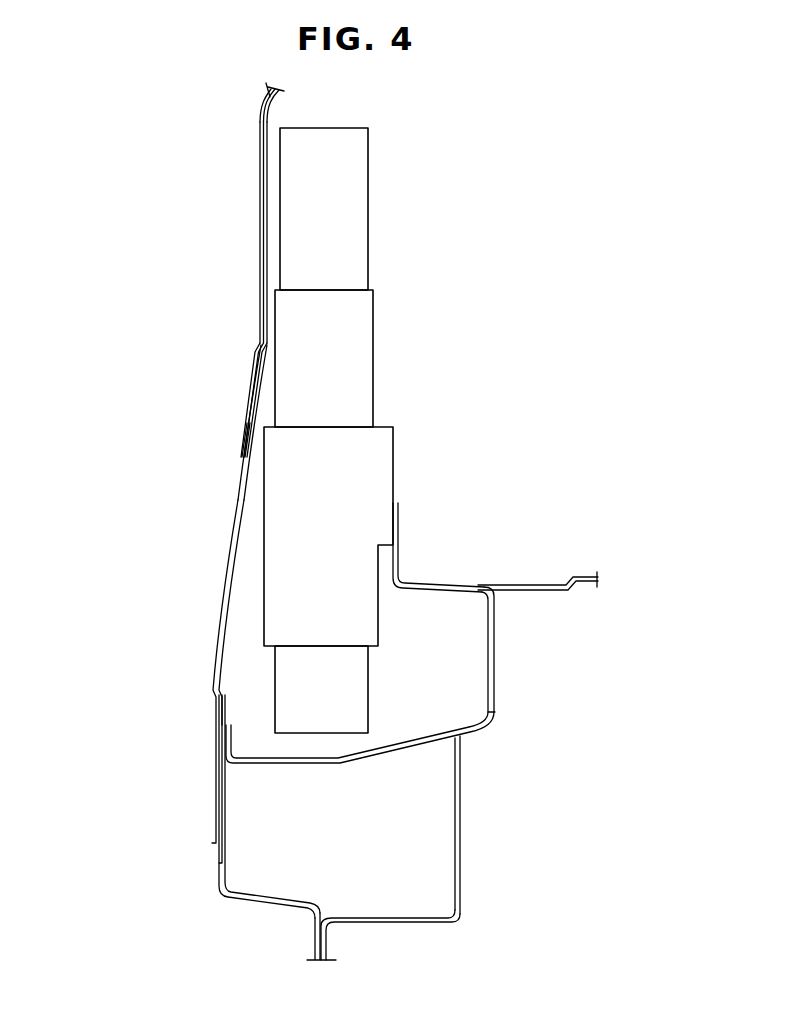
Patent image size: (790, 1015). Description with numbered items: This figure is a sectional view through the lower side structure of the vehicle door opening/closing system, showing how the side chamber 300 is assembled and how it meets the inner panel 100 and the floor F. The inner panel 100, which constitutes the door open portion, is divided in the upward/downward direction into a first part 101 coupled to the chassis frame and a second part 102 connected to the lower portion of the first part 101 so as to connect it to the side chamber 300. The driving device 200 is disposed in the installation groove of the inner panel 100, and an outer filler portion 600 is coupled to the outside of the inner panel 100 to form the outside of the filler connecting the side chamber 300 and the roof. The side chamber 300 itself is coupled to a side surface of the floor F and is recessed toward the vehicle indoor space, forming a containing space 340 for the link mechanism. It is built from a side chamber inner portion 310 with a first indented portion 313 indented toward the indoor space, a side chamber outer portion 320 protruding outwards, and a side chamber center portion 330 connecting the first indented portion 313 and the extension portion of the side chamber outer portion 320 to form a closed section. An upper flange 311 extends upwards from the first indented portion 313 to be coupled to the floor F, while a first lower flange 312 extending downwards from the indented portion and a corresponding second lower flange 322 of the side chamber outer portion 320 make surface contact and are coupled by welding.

The inner panel 100 is at (146, 594).
The first part 101 is at (252, 397).
The second part 102 is at (171, 671).
The driving device 200 is at (365, 190).
The side chamber 300 is at (373, 754).
The side chamber inner portion 310 is at (458, 863).
The upper flange 311 is at (400, 545).
The first lower flange 312 is at (328, 946).
The first indented portion 313 is at (431, 810).
The side chamber outer portion 320 is at (235, 843).
The second lower flange 322 is at (315, 938).
The side chamber center portion 330 is at (373, 764).
The containing space 340 is at (461, 676).
The outer filler portion 600 is at (262, 222).
The floor F is at (553, 593).